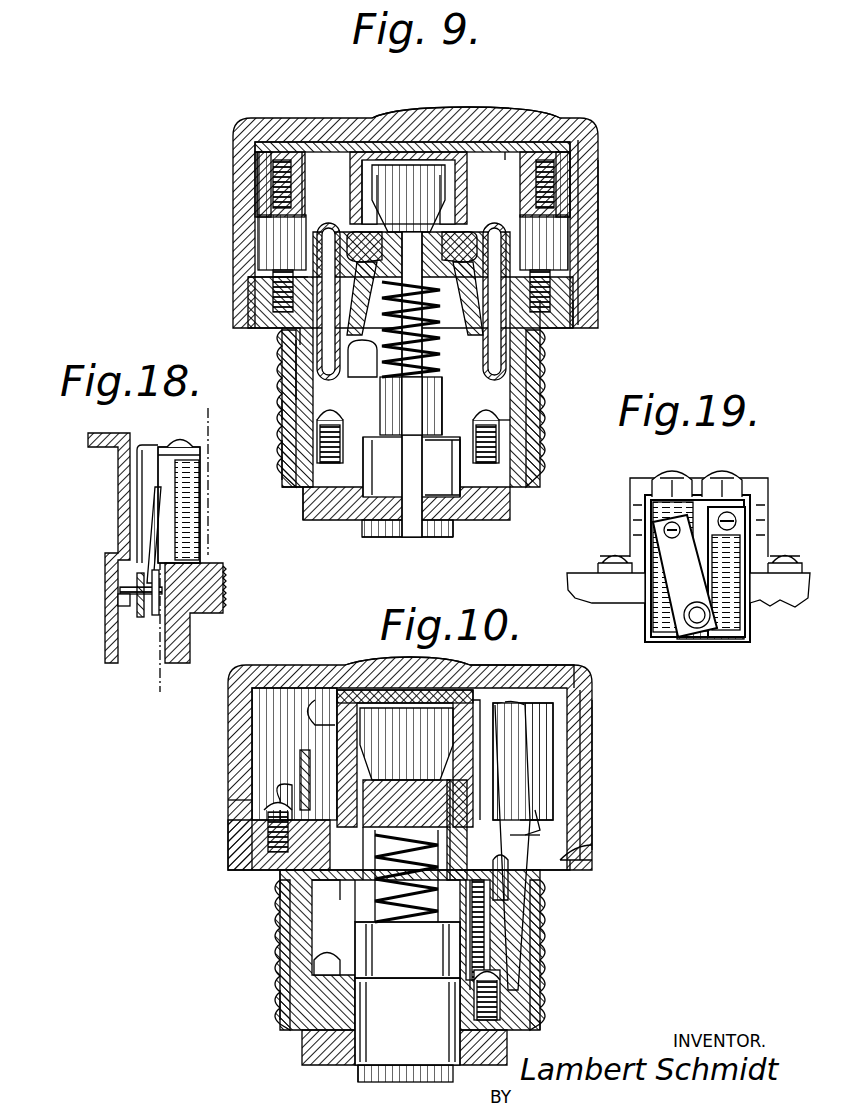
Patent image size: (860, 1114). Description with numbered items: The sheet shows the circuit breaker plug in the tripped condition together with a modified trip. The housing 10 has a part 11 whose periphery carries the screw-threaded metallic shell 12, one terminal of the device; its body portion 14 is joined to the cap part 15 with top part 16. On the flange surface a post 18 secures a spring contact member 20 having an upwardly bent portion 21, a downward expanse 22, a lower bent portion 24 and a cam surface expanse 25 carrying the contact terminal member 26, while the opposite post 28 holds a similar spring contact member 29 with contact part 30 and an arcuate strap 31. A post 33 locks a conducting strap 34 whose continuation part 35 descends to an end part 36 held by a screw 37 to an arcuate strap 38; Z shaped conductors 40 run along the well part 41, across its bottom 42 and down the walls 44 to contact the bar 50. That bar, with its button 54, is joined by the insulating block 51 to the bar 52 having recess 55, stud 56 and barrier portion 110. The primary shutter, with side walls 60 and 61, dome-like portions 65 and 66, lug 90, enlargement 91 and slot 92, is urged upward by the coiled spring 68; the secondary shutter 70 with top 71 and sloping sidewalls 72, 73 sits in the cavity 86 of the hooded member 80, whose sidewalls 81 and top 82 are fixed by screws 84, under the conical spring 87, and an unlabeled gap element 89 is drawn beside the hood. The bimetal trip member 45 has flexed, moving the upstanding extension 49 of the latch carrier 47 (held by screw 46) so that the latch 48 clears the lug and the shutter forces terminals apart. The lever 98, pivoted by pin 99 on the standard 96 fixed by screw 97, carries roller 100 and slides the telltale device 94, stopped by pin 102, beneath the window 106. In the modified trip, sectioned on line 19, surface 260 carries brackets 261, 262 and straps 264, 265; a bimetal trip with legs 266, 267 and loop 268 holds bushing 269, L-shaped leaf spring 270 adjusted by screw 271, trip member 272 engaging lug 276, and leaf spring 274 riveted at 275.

In FIG. 9, the housing 10 is at (611, 160).
In FIG. 10, the housing 10 is at (605, 696).
In FIG. 9, the housing part 11 is at (283, 460).
In FIG. 10, the housing part 11 is at (545, 1036).
In FIG. 9, the metallic shell 12 is at (545, 456).
In FIG. 10, the metallic shell 12 is at (545, 965).
In FIG. 9, the body portion 14 is at (555, 330).
In FIG. 10, the body portion 14 is at (580, 880).
In FIG. 9, the cap part 15 is at (594, 194).
In FIG. 10, the cap part 15 is at (594, 764).
In FIG. 9, the top part of cap 16 is at (550, 120).
In FIG. 10, the top part of cap 16 is at (545, 668).
In FIG. 9, the post 18 is at (262, 247).
In FIG. 9, the spring contact member 20 is at (263, 272).
In FIG. 9, the upwardly bent portion 21 is at (330, 221).
In FIG. 9, the downward expanse 22 is at (285, 342).
In FIG. 9, the lower bent portion 24 is at (340, 362).
In FIG. 9, the cam surface expanse 25 is at (358, 300).
In FIG. 9, the contact terminal member 26 is at (370, 232).
In FIG. 9, the post 28 is at (566, 236).
In FIG. 9, the spring contact member 29 is at (578, 332).
In FIG. 9, the contact part 30 is at (482, 236).
In FIG. 9, the arcuate shaped strap 31 is at (560, 258).
In FIG. 10, the post 33 is at (592, 742).
In FIG. 10, the conducting strap 34 is at (600, 825).
In FIG. 10, the continuation part 35 is at (520, 913).
In FIG. 9, the end part 36 is at (283, 411).
In FIG. 9, the screw 37 is at (300, 488).
In FIG. 9, the arcuate shaped strap 38 is at (320, 437).
In FIG. 10, the arcuate shaped strap 38 is at (314, 963).
In FIG. 9, the Z shaped conductors 40 is at (320, 487).
In FIG. 9, the well part 41 is at (438, 492).
In FIG. 10, the well part 41 is at (305, 1055).
In FIG. 9, the bottom of well 42 is at (470, 528).
In FIG. 10, the bottom of well 42 is at (352, 1072).
In FIG. 9, the walls of bottom opening 44 is at (388, 540).
In FIG. 10, the thermostatic bimetal trip member 45 is at (585, 790).
In FIG. 10, the screw 46 is at (540, 1008).
In FIG. 10, the latch carrier 47 is at (540, 888).
In FIG. 10, the latch 48 is at (592, 862).
In FIG. 10, the upstanding extension 49 is at (545, 816).
In FIG. 9, the bar 50 is at (398, 470).
In FIG. 10, the bar 50 is at (430, 1078).
In FIG. 9, the molded insulating block 51 is at (411, 406).
In FIG. 10, the molded insulating block 51 is at (357, 945).
In FIG. 9, the bar 52 is at (442, 352).
In FIG. 10, the bar 52 is at (372, 915).
In FIG. 9, the button 54 is at (372, 536).
In FIG. 10, the button 54 is at (392, 1087).
In FIG. 10, the recess 55 is at (372, 890).
In FIG. 10, the stud 56 is at (396, 923).
In FIG. 10, the barrier side wall 60 is at (370, 800).
In FIG. 10, the barrier side wall 61 is at (450, 804).
In FIG. 9, the dome-like portion 65 is at (292, 366).
In FIG. 9, the dome-like portion 66 is at (538, 335).
In FIG. 10, the coiled spring 68 is at (442, 893).
In FIG. 9, the secondary shutter 70 is at (401, 150).
In FIG. 10, the secondary shutter 70 is at (405, 757).
In FIG. 9, the circular top 71 is at (365, 160).
In FIG. 9, the sloping sidewall 72 is at (375, 178).
In FIG. 9, the sloping sidewall 73 is at (503, 148).
In FIG. 9, the hooded member 80 is at (300, 148).
In FIG. 10, the sidewalls 81 is at (345, 750).
In FIG. 10, the top 82 is at (470, 690).
In FIG. 9, the screws 84 is at (270, 187).
In FIG. 9, the cavity 86 is at (444, 186).
In FIG. 9, the conical spring 87 is at (420, 150).
In FIG. 10, the conical spring 87 is at (375, 688).
In FIG. 10, the gap 89 is at (478, 715).
In FIG. 10, the extension (lug) 90 is at (585, 839).
In FIG. 10, the enlargement 91 is at (300, 915).
In FIG. 10, the diagonal slot 92 is at (380, 840).
In FIG. 9, the telltale device 94 is at (522, 146).
In FIG. 10, the telltale device 94 is at (334, 712).
In FIG. 10, the standard 96 is at (290, 800).
In FIG. 10, the screw 97 is at (236, 836).
In FIG. 10, the lever 98 is at (305, 800).
In FIG. 10, the headed pin 99 is at (300, 880).
In FIG. 10, the roller 100 is at (298, 895).
In FIG. 10, the pin 102 is at (300, 690).
In FIG. 9, the transparent window 106 is at (447, 116).
In FIG. 10, the transparent window 106 is at (425, 665).
In FIG. 9, the barrier bar portion 110 is at (414, 384).
In FIG. 18, the section line 19 is at (192, 420).
In FIG. 18, the surface 260 is at (228, 575).
In FIG. 18, the Z-shaped bracket 261 is at (190, 483).
In FIG. 19, the Z-shaped bracket 261 is at (752, 486).
In FIG. 19, the Z-shaped bracket 262 is at (638, 490).
In FIG. 19, the conducting strap 264 is at (799, 592).
In FIG. 19, the conducting strap 265 is at (590, 587).
In FIG. 19, the leg 266 is at (702, 492).
In FIG. 19, the leg 267 is at (660, 510).
In FIG. 18, the loop portion 268 is at (140, 617).
In FIG. 19, the loop portion 268 is at (712, 640).
In FIG. 18, the bushing 269 is at (108, 640).
In FIG. 18, the L-shaped leaf spring 270 is at (150, 520).
In FIG. 19, the L-shaped leaf spring 270 is at (730, 548).
In FIG. 18, the screw 271 is at (150, 485).
In FIG. 19, the screw 271 is at (738, 518).
In FIG. 18, the headed trip member 272 is at (120, 592).
In FIG. 19, the leaf spring 274 is at (680, 568).
In FIG. 19, the rivet 275 is at (665, 533).
In FIG. 18, the lug 276 is at (120, 606).